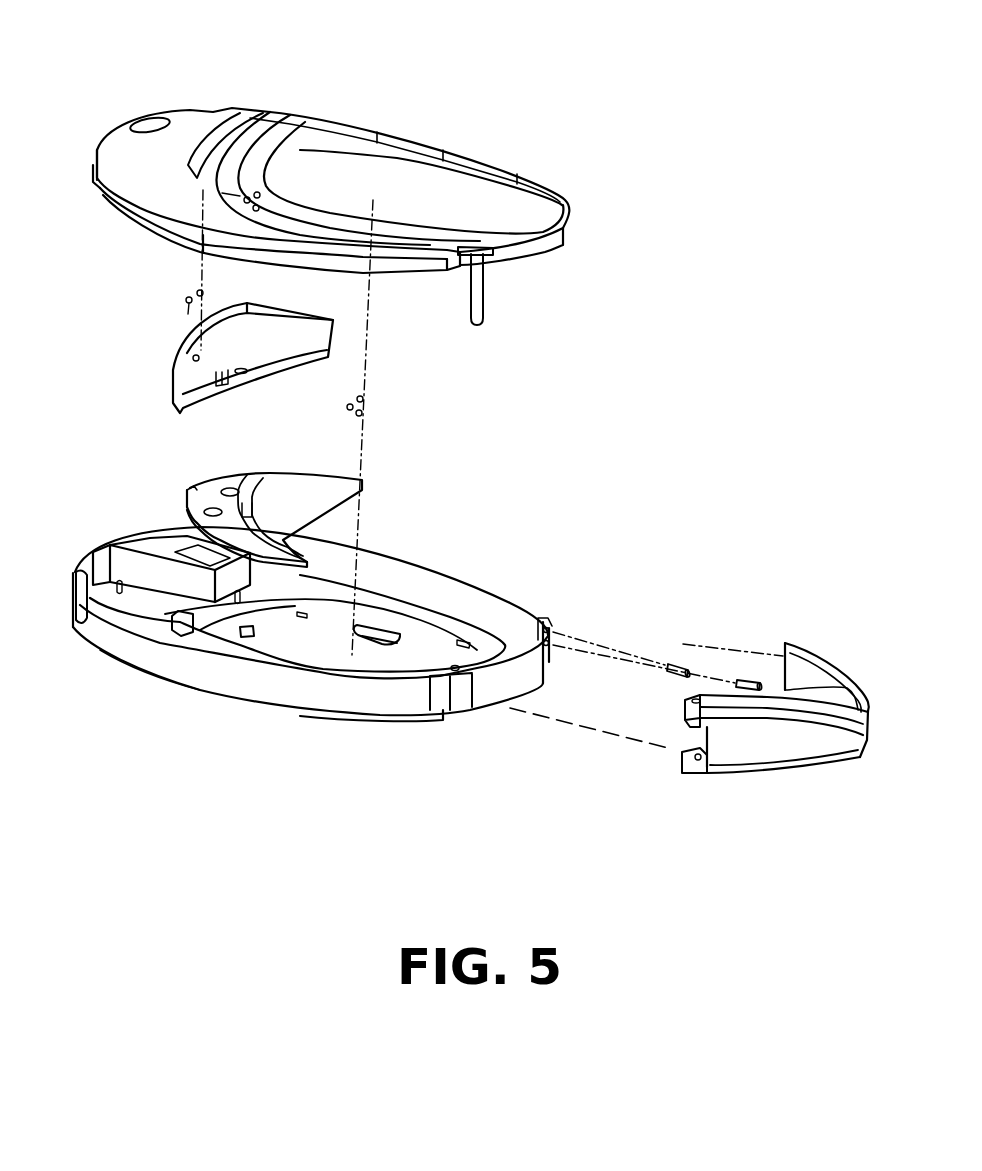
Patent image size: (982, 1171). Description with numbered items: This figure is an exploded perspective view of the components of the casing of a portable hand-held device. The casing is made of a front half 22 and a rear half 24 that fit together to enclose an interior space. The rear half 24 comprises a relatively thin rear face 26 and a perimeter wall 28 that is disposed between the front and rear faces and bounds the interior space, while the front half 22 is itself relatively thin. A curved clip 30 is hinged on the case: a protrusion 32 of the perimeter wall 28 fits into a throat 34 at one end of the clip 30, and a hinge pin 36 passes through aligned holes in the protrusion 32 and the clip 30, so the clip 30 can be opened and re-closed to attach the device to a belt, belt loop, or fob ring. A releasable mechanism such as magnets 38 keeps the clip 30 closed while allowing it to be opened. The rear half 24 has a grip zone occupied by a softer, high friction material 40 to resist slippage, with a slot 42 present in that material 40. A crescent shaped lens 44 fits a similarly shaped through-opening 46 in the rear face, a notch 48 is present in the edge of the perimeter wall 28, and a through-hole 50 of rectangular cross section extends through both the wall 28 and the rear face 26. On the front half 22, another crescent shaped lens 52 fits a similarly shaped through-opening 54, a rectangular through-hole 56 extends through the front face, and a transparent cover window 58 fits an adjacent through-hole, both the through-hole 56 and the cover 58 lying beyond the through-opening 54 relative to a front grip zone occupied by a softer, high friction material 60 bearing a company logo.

The front half 22 is at (152, 227).
The rear half 24 is at (90, 537).
The rear face 26 is at (383, 714).
The perimeter wall 28 is at (520, 610).
The curved clip 30 is at (785, 770).
The protrusion 32 is at (463, 690).
The throat 34 is at (693, 737).
The hinge pin 36 is at (483, 310).
The magnets 38 is at (743, 680).
The high friction material 40 is at (430, 647).
The slot 42 is at (390, 623).
The crescent shaped lens 44 is at (327, 490).
The through-opening 46 is at (215, 627).
The notch 48 is at (68, 610).
The through-hole 50 is at (187, 550).
The crescent shaped lens 52 is at (173, 369).
The through-opening 54 is at (240, 118).
The through-hole 56 is at (213, 110).
The transparent cover window 58 is at (150, 124).
The high friction material 60 is at (490, 193).